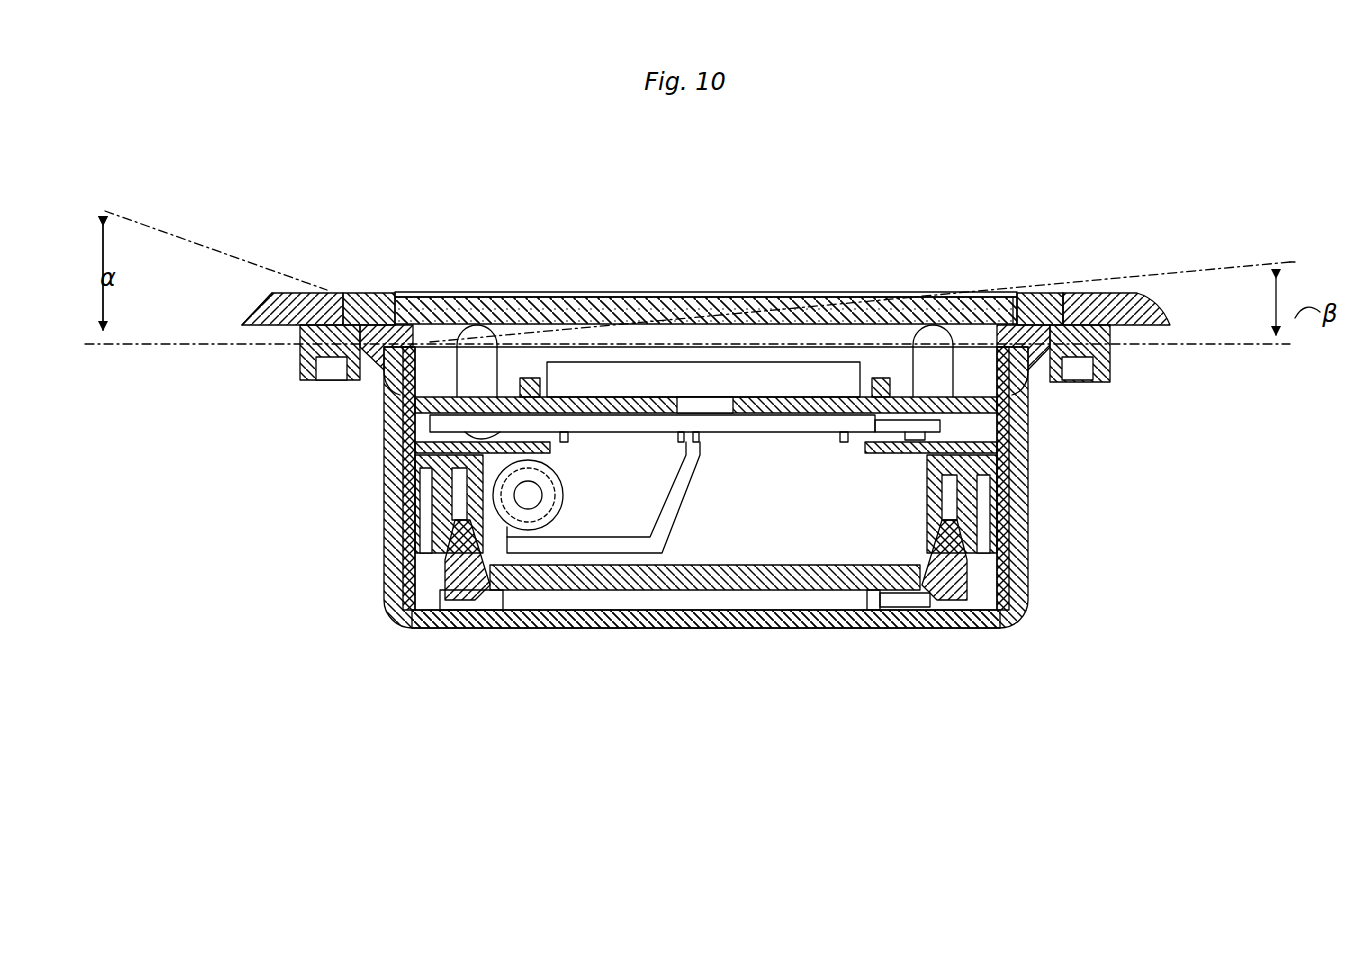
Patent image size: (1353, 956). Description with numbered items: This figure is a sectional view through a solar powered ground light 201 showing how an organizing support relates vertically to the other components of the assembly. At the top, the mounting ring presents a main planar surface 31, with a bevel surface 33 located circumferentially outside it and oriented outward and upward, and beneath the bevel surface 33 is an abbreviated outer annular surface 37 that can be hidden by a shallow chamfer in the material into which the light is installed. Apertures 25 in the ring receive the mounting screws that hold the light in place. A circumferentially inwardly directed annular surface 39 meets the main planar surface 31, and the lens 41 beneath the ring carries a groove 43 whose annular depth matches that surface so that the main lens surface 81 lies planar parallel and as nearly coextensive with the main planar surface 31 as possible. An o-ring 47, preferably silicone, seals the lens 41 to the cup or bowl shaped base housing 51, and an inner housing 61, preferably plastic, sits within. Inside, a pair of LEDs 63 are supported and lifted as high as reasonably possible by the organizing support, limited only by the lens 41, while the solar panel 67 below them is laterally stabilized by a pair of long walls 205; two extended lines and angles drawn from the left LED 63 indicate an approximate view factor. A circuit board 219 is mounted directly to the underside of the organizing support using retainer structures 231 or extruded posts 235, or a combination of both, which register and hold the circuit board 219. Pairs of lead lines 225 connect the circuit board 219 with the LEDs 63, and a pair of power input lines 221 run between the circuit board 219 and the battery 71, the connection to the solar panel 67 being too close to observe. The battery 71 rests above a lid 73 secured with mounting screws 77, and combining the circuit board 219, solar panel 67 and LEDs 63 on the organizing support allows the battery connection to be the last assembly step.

The flush-mount assembly 201 is at (200, 210).
The apertures 25 is at (1083, 295).
The main planar surface 31 is at (362, 292).
The bevel surface 33 is at (257, 312).
The abbreviated outer annular surface 37 is at (237, 322).
The inwardly directed annular surface 39 is at (403, 312).
The lens 41 is at (965, 315).
The groove 43 is at (370, 322).
The o-ring 47 is at (382, 385).
The base housing 51 is at (383, 468).
The inner housing 61 is at (403, 508).
The LEDs 63 is at (480, 330).
The solar panel 67 is at (613, 365).
The battery 71 is at (530, 530).
The lid 73 is at (687, 613).
The mounting screws 77 is at (453, 555).
The main lens surface 81 is at (718, 292).
The long walls 205 is at (527, 377).
The circuit board 219 is at (817, 400).
The power input lines 221 is at (660, 503).
The lead lines 225 is at (470, 418).
The retainer structures 231 is at (565, 443).
The extruded posts 235 is at (580, 457).